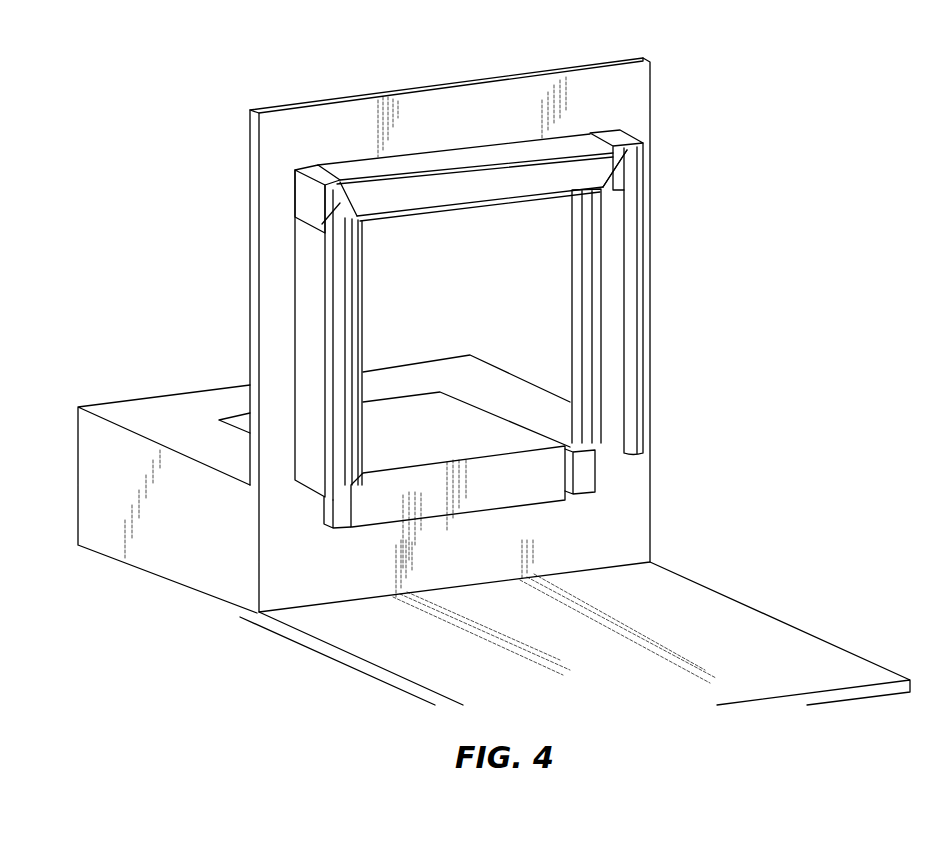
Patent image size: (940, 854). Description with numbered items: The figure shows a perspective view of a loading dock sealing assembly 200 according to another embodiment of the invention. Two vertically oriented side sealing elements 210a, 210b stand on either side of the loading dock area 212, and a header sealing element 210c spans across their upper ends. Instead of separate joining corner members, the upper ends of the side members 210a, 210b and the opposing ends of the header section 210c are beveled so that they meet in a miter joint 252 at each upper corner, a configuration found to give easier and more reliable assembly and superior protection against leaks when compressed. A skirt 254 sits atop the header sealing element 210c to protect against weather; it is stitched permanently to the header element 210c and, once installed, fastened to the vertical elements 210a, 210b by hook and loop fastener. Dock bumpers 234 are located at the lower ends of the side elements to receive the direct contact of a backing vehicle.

The loading dock sealing assembly 200 is at (127, 101).
The vertical side sealing element 210a is at (617, 248).
The vertical side sealing element 210b is at (303, 312).
The header sealing element 210c is at (523, 178).
The loading dock area 212 is at (490, 289).
The dock bumper 234 is at (336, 520).
The miter joint 252 is at (322, 224).
The skirt 254 is at (312, 202).